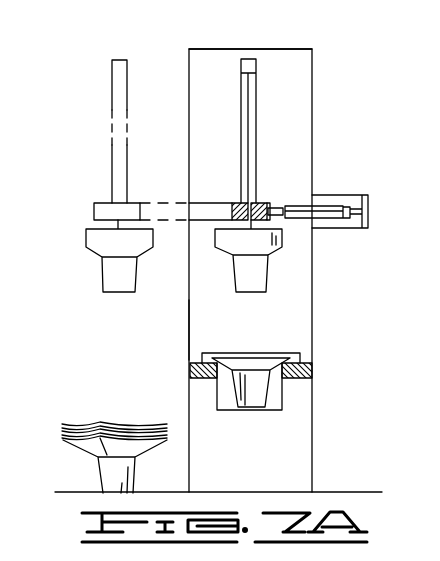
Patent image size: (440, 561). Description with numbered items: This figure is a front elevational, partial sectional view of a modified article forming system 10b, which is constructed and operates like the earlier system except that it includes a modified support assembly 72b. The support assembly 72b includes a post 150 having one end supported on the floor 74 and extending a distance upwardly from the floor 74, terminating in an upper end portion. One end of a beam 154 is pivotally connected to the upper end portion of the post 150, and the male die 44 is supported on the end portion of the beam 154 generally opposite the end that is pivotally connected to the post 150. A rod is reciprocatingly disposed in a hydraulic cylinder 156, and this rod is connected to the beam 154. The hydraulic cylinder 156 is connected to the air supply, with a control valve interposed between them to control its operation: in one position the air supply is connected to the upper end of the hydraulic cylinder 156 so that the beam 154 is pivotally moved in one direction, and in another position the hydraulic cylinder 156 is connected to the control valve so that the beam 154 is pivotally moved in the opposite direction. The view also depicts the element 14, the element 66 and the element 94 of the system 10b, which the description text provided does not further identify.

The modified system 10b is at (321, 99).
The container 14 is at (97, 459).
The male die 44 is at (250, 267).
The plunger rod 66 is at (258, 80).
The modified support assembly 72b is at (316, 295).
The floor 74 is at (348, 490).
The container nest 94 is at (268, 395).
The post 150 is at (202, 317).
The beam 154 is at (263, 202).
The hydraulic cylinder 156 is at (170, 200).